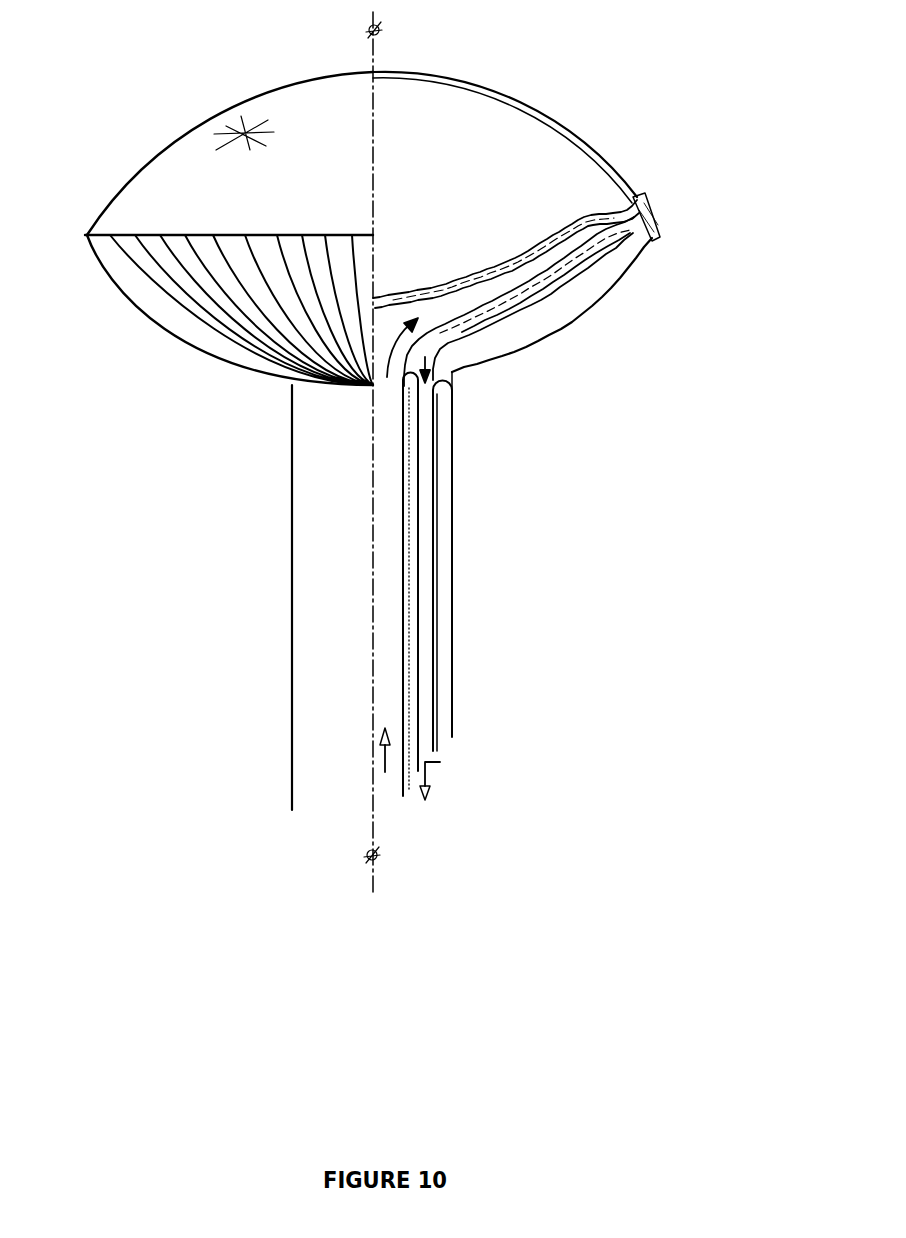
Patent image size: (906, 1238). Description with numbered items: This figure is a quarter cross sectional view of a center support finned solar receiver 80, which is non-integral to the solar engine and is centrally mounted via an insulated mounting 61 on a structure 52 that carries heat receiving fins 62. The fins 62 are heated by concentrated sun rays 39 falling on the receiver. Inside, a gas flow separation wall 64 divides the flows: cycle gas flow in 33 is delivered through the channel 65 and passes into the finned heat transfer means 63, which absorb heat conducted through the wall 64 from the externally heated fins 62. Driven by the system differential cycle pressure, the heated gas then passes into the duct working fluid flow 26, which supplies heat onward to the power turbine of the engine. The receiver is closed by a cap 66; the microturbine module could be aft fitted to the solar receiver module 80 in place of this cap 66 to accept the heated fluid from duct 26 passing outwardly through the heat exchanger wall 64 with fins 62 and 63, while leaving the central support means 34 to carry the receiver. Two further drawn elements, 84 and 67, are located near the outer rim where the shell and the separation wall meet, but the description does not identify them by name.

The solar receiver 80 is at (133, 213).
The channel 65 is at (468, 283).
The cap 66 is at (535, 108).
The hidden plate edge 84 is at (555, 226).
The lip 67 is at (637, 205).
The sun rays 39 is at (670, 270).
The heat receiving fins 62 is at (588, 305).
The gas flow separation wall 64 is at (523, 332).
The finned heat transfer means 63 is at (457, 340).
The central support means 34 is at (323, 520).
The insulated mounting 61 is at (413, 571).
The structure 52 is at (434, 640).
The duct working fluid flow 26 is at (440, 762).
The cycle gas flow in 33 is at (389, 786).